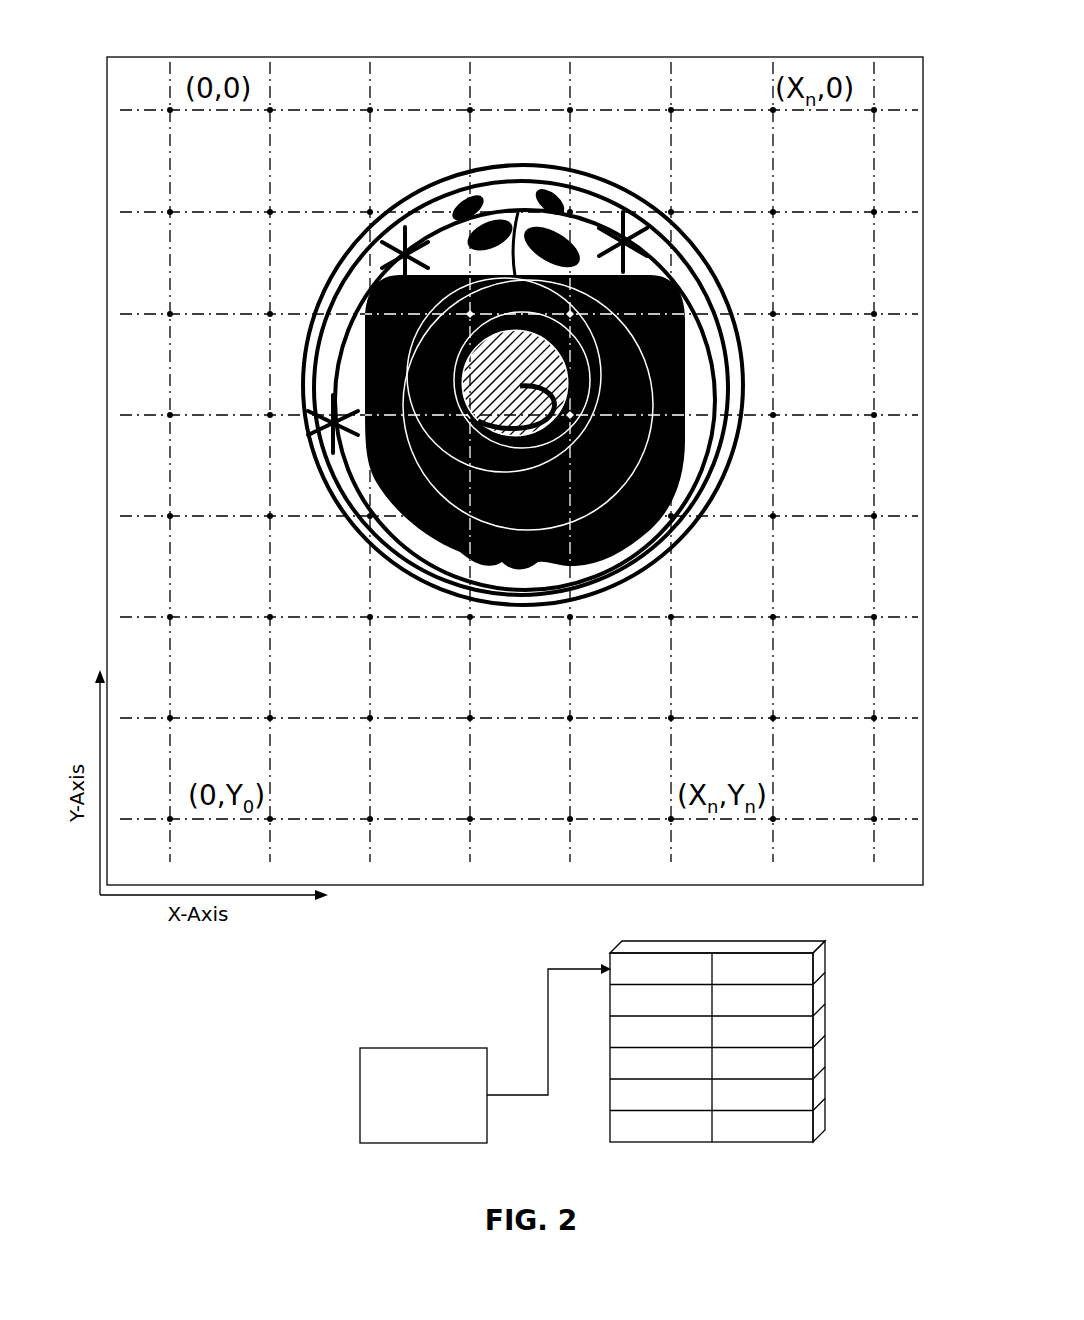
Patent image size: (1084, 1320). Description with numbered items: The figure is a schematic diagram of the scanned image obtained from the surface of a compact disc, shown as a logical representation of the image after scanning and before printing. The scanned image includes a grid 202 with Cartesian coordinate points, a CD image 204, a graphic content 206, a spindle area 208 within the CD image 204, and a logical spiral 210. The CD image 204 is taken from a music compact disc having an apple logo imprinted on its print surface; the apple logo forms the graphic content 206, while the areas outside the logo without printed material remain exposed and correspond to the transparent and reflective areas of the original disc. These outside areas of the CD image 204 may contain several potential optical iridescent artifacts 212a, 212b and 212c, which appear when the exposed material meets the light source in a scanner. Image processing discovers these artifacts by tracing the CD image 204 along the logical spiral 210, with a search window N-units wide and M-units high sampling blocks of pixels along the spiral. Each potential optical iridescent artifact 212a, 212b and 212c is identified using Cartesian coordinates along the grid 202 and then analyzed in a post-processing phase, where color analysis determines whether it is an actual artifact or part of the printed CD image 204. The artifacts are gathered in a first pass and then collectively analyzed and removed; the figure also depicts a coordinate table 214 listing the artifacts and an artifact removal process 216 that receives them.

The grid 202 is at (513, 58).
The CD image 204 is at (522, 165).
The graphic content 206 is at (668, 470).
The spindle area 208 is at (515, 443).
The logical spiral 210 is at (700, 287).
The potential optical iridescent artifact 212a is at (337, 428).
The potential optical iridescent artifact 212b is at (597, 257).
The potential optical iridescent artifact 212c is at (390, 267).
The artifact coordinate table 214 is at (713, 953).
The artifact removal process 216 is at (423, 1048).